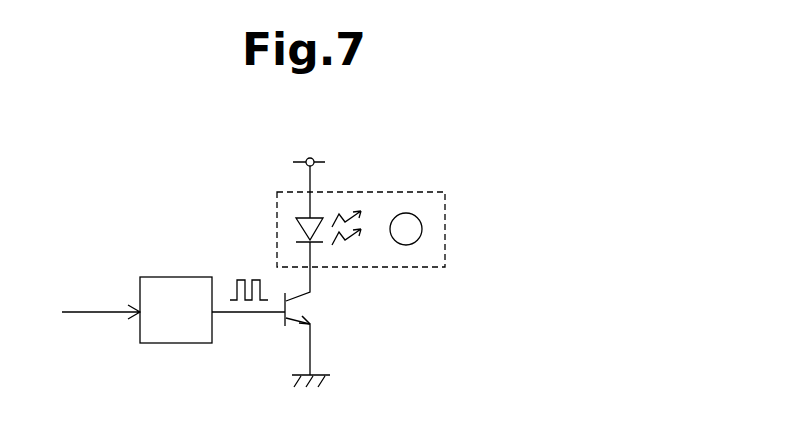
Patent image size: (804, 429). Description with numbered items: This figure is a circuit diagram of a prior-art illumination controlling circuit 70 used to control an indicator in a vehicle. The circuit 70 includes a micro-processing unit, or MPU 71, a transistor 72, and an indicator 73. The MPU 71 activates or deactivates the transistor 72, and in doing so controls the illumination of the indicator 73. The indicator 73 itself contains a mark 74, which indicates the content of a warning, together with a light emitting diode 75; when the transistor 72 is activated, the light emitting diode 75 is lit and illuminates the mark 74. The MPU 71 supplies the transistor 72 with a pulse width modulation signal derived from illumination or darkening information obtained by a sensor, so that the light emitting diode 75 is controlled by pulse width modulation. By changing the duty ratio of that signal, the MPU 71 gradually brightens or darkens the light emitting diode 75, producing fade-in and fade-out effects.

The light emission control circuit 70 is at (83, 177).
The micro-processing unit (MPU) 71 is at (198, 277).
The transistor 72 is at (287, 320).
The indicator 73 is at (428, 192).
The mark 74 is at (300, 230).
The light emitting diode 75 is at (422, 229).